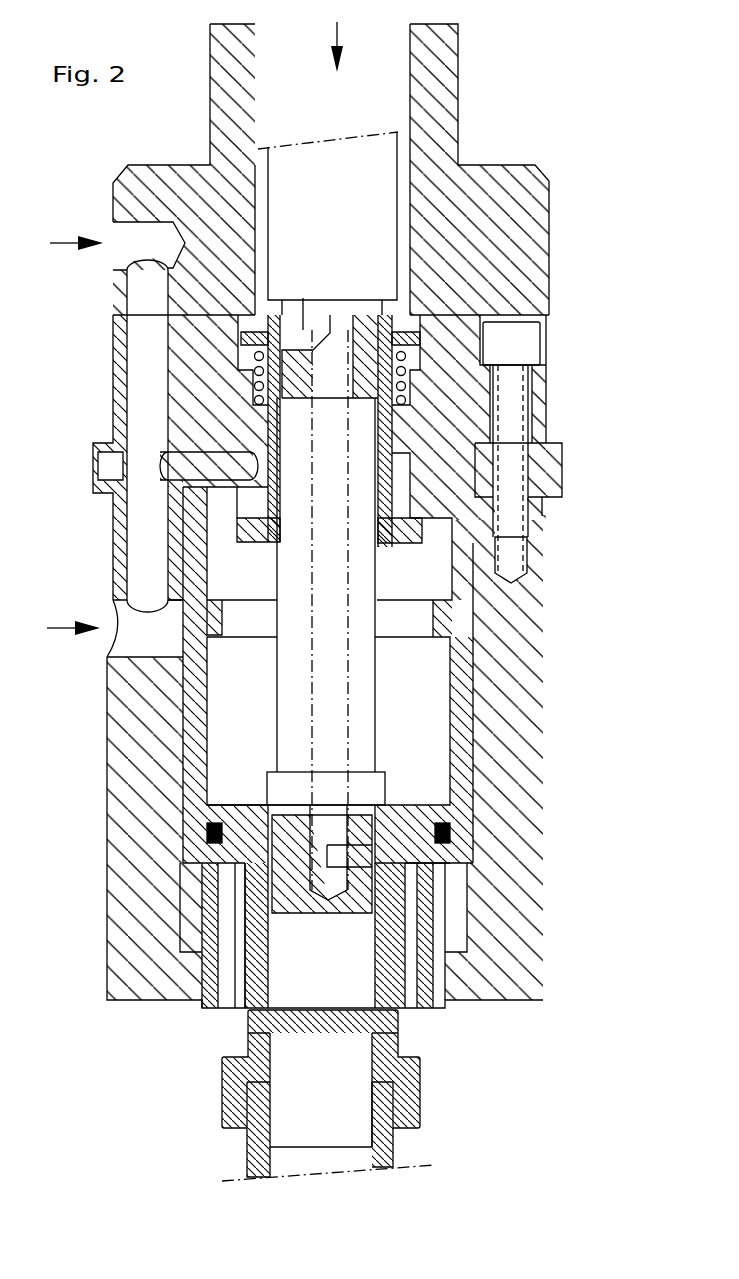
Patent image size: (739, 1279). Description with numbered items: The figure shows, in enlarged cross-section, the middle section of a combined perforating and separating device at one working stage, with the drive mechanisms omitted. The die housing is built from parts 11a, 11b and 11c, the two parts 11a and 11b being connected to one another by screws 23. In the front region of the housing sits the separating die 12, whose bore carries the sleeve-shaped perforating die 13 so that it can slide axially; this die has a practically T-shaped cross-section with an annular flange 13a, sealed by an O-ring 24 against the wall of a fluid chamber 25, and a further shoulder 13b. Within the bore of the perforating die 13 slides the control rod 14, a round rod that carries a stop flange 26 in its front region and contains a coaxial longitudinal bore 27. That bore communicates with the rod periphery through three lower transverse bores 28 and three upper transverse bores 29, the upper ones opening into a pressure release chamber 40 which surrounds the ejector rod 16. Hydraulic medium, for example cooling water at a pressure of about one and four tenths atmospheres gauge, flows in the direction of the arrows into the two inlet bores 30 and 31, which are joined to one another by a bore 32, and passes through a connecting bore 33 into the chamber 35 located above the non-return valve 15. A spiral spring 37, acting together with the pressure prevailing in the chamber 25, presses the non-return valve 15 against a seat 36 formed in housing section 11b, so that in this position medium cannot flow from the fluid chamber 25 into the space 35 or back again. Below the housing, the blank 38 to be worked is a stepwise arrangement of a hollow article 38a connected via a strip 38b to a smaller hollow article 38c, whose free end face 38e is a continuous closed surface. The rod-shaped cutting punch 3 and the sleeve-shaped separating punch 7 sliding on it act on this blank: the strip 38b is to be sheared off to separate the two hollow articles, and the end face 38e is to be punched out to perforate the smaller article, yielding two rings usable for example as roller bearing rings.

The cutting punch 3 is at (320, 1109).
The separating punch 7 is at (258, 1154).
The die housing part 11a is at (505, 975).
The die housing part 11b is at (452, 396).
The die housing part 11c is at (505, 236).
The separating die 12 is at (457, 881).
The perforating die 13 is at (271, 943).
The annular flange 13a is at (205, 809).
The sleeve shoulder 13b is at (246, 804).
The control rod 14 is at (290, 438).
The non-return valve 15 is at (258, 531).
The ejector rod 16 is at (360, 176).
The screws 23 is at (512, 498).
The O-ring 24 is at (450, 834).
The fluid chamber 25 is at (420, 588).
The stop flange 26 is at (360, 791).
The longitudinal bore 27 is at (323, 671).
The lower transverse bores 28 is at (364, 912).
The upper transverse bores 29 is at (303, 298).
The inlet bore 30 is at (128, 640).
The inlet bore 31 is at (138, 240).
The bore 32 is at (140, 348).
The connecting bore 33 is at (205, 470).
The chamber 35 is at (398, 479).
The seat 36 is at (250, 528).
The spiral spring 37 is at (395, 360).
The blank 38 is at (440, 1088).
The hollow article 38a is at (425, 1116).
The strip 38b is at (417, 1056).
The smaller hollow article 38c is at (247, 1037).
The end face 38e is at (313, 1009).
The pressure release chamber 40 is at (263, 177).